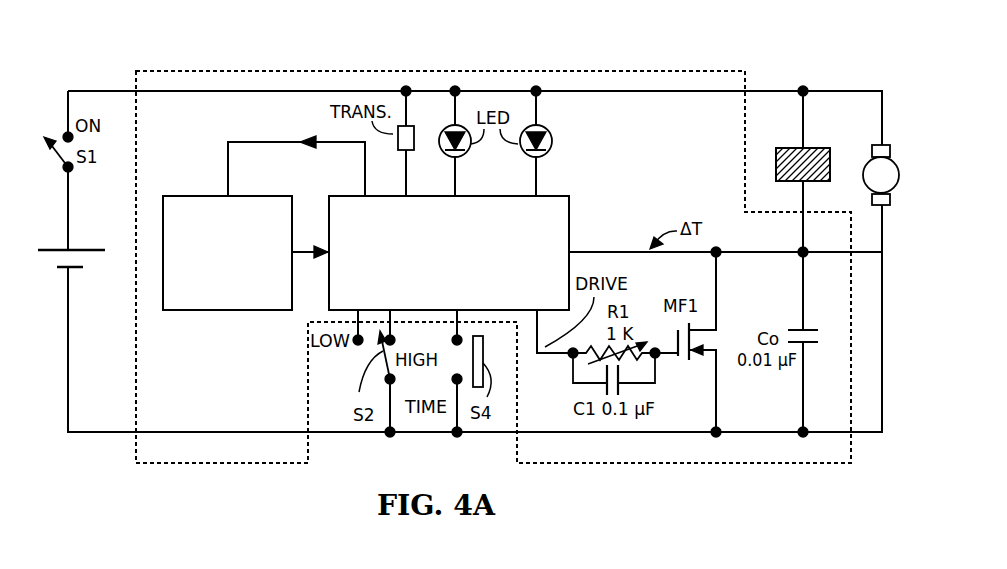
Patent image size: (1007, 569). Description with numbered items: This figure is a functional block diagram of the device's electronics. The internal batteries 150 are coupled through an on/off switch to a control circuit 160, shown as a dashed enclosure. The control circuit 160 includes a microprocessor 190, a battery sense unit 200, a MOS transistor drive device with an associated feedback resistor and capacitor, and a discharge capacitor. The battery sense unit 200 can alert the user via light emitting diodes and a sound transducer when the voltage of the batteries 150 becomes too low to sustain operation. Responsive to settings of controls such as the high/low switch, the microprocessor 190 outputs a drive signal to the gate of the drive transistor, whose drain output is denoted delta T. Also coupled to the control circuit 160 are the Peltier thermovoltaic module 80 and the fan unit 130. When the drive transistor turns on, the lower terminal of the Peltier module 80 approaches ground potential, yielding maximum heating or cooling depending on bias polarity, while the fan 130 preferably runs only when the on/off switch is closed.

The control circuit 160 is at (355, 66).
The microprocessor 190 is at (565, 192).
The battery sense circuit 200 is at (250, 313).
The internal batteries 150 is at (85, 262).
The Peltier thermovoltaic module 80 is at (830, 163).
The fan unit 130 is at (881, 175).